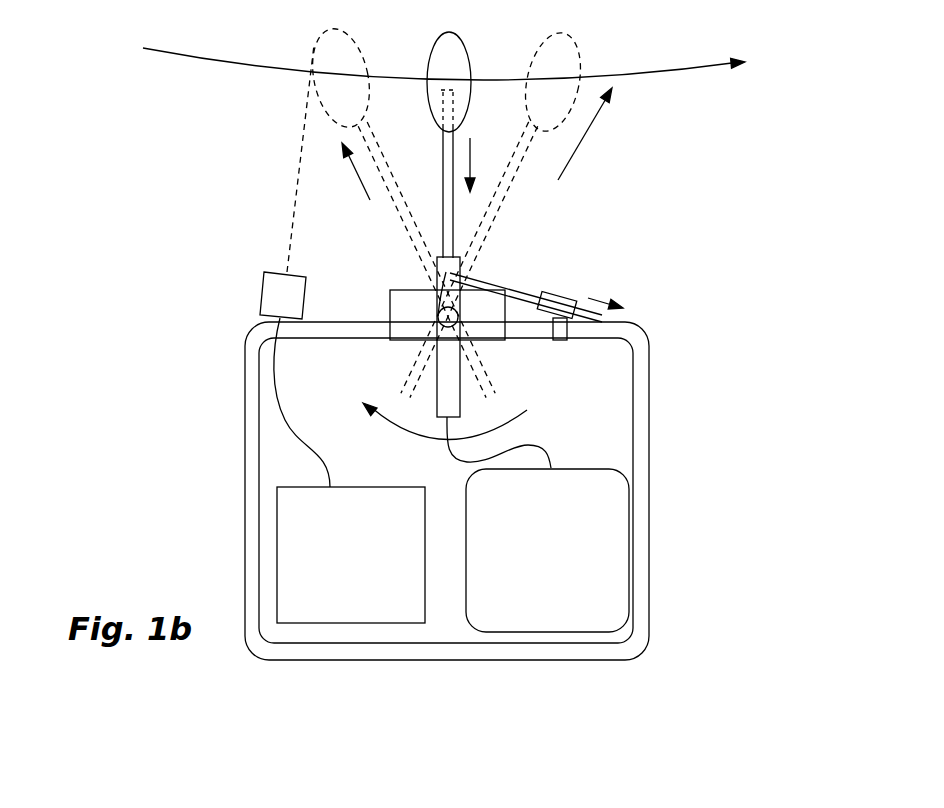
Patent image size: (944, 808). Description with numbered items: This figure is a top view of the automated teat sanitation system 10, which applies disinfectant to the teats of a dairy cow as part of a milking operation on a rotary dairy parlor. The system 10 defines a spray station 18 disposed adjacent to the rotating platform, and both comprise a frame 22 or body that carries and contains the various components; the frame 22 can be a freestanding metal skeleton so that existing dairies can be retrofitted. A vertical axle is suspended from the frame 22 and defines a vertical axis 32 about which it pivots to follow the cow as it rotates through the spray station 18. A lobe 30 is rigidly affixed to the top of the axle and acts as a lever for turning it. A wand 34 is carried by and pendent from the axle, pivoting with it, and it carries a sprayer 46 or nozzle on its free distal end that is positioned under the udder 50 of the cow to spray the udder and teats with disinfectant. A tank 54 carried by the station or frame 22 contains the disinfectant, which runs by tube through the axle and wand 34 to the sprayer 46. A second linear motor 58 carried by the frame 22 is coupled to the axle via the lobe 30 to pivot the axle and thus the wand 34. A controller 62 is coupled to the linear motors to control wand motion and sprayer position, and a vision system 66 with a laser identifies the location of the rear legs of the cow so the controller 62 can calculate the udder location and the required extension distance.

The system 10 is at (451, 333).
The spray station 18 is at (252, 381).
The frame 22 is at (252, 478).
The lobe 30 is at (442, 296).
The vertical axis 32 is at (455, 325).
The wand 34 is at (440, 182).
The sprayer 46 is at (447, 80).
The udder 50 is at (457, 33).
The tank 54 is at (606, 563).
The second linear motor 58 is at (558, 296).
The controller 62 is at (300, 550).
The vision system 66 is at (263, 286).